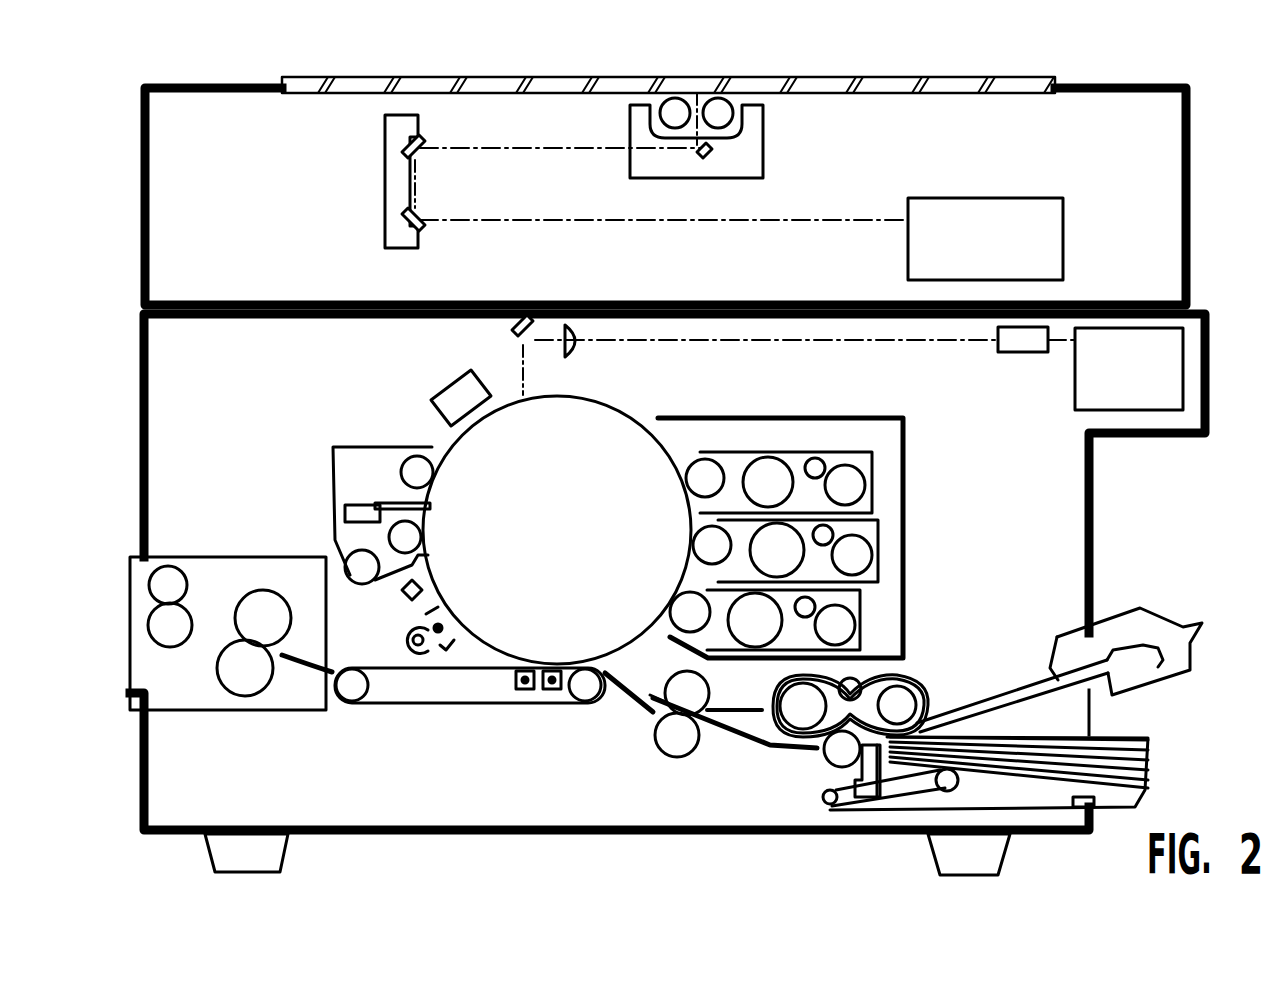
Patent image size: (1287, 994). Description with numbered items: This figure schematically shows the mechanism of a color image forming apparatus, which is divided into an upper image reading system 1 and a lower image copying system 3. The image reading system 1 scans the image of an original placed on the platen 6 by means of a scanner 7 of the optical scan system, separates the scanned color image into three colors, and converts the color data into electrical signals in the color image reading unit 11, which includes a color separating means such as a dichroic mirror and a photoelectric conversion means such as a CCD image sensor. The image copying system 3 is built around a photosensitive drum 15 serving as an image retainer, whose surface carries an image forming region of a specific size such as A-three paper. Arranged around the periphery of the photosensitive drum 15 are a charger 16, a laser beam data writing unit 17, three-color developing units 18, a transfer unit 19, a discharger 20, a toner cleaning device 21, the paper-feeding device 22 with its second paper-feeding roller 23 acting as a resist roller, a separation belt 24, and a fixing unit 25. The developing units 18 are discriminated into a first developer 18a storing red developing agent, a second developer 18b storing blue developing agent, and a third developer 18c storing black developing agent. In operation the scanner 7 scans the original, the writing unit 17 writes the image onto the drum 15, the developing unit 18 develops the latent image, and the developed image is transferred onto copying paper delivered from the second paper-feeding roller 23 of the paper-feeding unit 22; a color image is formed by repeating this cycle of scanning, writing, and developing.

The image reading system 1 is at (370, 191).
The image copying system 3 is at (245, 438).
The platen 6 is at (957, 80).
The scanner 7 is at (763, 155).
The color image reading unit 11 is at (1017, 198).
The photosensitive drum 15 is at (608, 408).
The charger 16 is at (433, 392).
The laser beam data writing unit 17 is at (1075, 382).
The three-color developing units 18 is at (811, 510).
The first developer 18a is at (870, 467).
The second developer 18b is at (876, 537).
The third developer 18c is at (860, 604).
The transfer unit 19 is at (553, 700).
The discharger 20 is at (408, 618).
The toner cleaning device 21 is at (357, 447).
The paper-feeding device 22 is at (808, 760).
The second paper-feeding roller 23 is at (660, 745).
The separation belt 24 is at (430, 707).
The fixing unit 25 is at (228, 557).